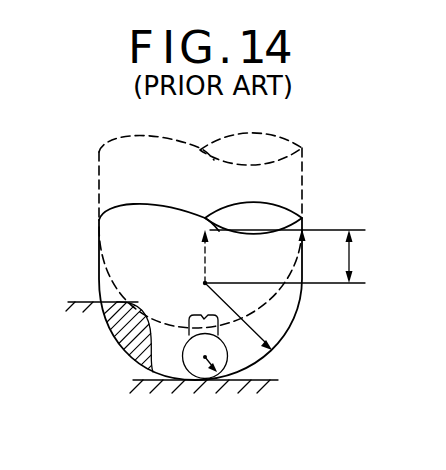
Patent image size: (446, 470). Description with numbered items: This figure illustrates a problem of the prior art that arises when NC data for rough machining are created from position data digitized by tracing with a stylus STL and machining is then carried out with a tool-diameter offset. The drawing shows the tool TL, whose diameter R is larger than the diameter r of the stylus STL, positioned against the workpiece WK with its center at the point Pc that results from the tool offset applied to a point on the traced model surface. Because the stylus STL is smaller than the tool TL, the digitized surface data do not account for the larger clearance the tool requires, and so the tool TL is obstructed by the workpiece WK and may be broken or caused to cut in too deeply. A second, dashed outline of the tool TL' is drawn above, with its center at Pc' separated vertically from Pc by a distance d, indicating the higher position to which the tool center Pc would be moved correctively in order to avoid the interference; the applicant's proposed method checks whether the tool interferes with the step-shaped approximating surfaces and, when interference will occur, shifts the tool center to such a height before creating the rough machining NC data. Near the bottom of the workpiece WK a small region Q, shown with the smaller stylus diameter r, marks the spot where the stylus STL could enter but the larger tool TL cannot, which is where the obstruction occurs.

The tool (previous position) TL' is at (248, 230).
The tool TL is at (236, 291).
The workpiece WK is at (85, 301).
The stylus STL is at (260, 388).
The tool center (previous position) Pc' is at (253, 232).
The center of the tool Pc is at (254, 259).
The diameter of the tool R is at (238, 316).
The depth of cut d is at (356, 256).
The cusp / remaining material Q is at (196, 381).
The diameter of the stylus r is at (210, 357).